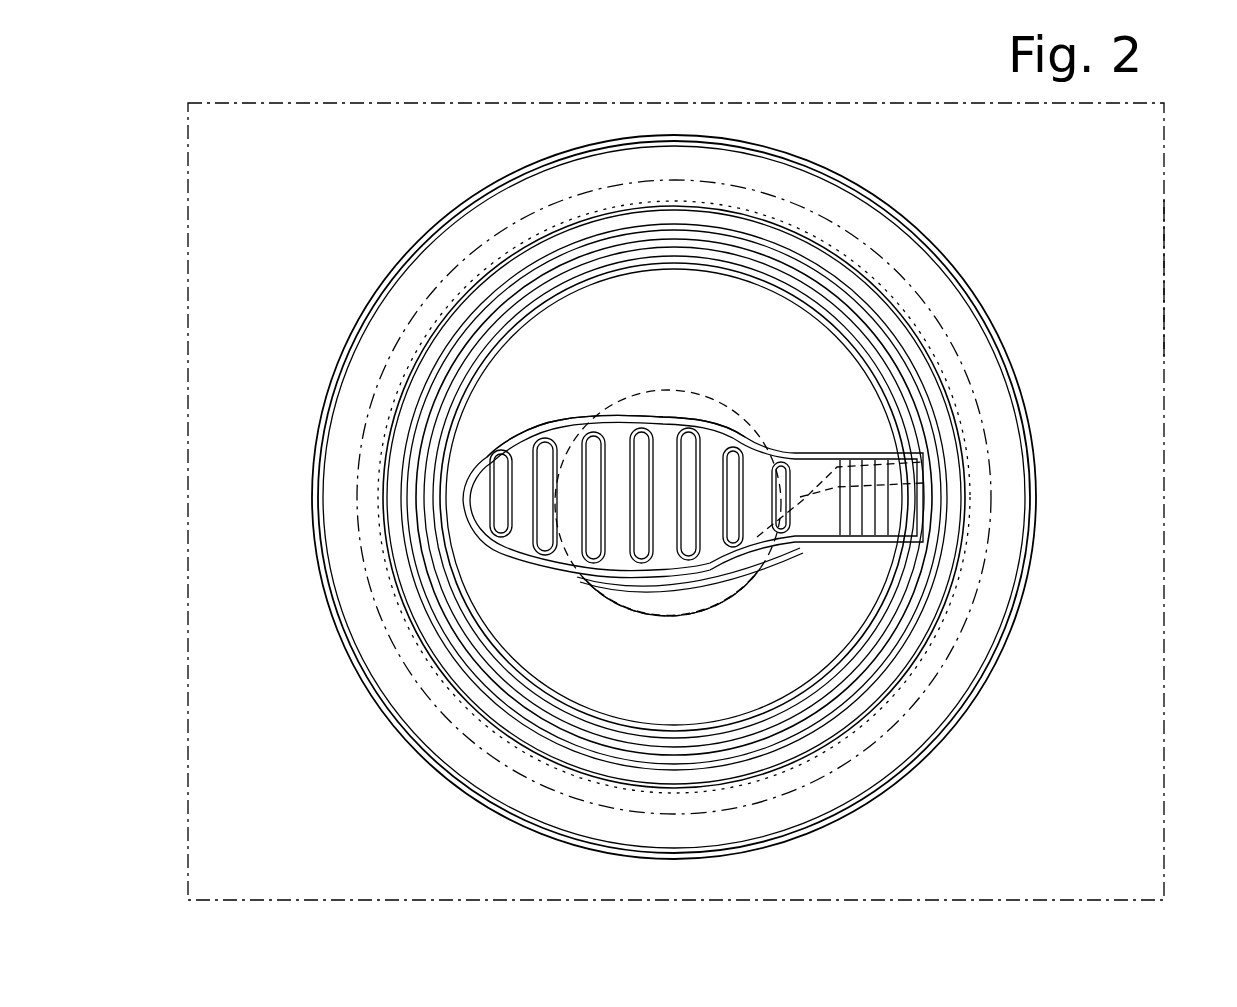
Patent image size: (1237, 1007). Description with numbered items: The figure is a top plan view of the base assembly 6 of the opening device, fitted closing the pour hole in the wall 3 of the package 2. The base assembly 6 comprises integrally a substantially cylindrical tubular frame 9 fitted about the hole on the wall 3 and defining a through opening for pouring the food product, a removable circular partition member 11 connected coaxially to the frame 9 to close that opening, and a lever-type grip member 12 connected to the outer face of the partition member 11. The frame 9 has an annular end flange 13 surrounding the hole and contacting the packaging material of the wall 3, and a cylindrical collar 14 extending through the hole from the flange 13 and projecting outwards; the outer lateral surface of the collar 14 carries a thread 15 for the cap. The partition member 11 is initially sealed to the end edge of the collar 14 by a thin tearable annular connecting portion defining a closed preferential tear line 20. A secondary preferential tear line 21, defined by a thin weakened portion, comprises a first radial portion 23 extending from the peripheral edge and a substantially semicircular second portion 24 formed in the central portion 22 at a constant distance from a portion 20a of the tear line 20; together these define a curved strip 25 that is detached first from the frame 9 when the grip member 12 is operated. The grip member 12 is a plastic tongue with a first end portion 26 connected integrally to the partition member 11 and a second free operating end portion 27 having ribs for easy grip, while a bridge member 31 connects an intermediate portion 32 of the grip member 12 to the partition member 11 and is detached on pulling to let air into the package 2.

The package 2 is at (1090, 822).
The wall 3 is at (1112, 278).
The base assembly 6 is at (325, 668).
The tubular frame 9 is at (1018, 372).
The partition member 11 is at (545, 335).
The grip member 12 is at (663, 437).
The annular end flange 13 is at (1003, 596).
The cylindrical collar 14 is at (830, 708).
The thread 15 is at (895, 663).
The preferential tear line 20 is at (470, 352).
The portion of preferential tear line 20a is at (898, 597).
The secondary preferential tear line 21 is at (662, 592).
The central portion 22 is at (632, 415).
The first radial portion 23 is at (935, 462).
The second portion 24 is at (622, 586).
The curved strip 25 is at (685, 690).
The first end portion 26 is at (898, 510).
The second free operating end portion 27 is at (478, 480).
The bridge member 31 is at (758, 465).
The intermediate portion 32 is at (710, 462).